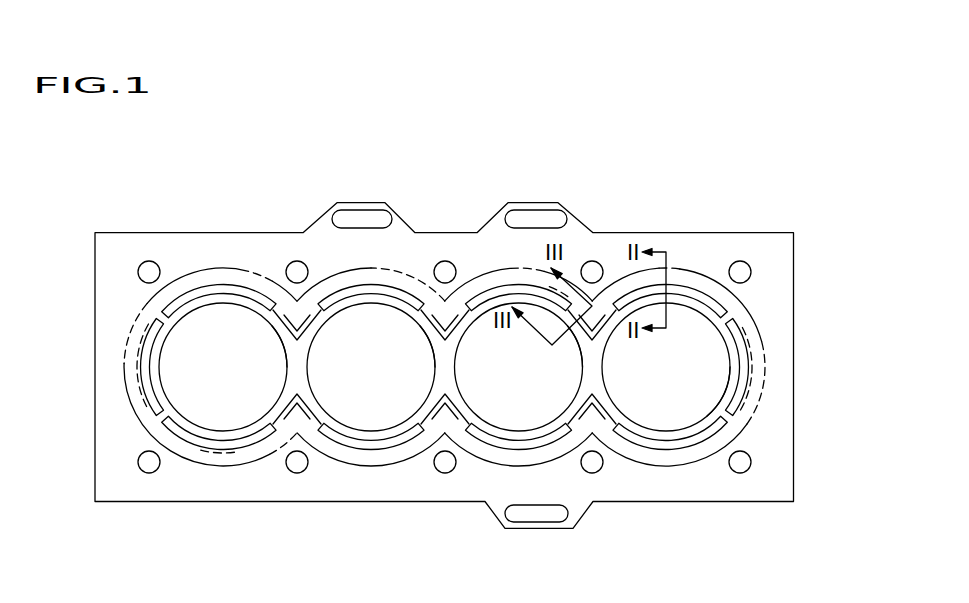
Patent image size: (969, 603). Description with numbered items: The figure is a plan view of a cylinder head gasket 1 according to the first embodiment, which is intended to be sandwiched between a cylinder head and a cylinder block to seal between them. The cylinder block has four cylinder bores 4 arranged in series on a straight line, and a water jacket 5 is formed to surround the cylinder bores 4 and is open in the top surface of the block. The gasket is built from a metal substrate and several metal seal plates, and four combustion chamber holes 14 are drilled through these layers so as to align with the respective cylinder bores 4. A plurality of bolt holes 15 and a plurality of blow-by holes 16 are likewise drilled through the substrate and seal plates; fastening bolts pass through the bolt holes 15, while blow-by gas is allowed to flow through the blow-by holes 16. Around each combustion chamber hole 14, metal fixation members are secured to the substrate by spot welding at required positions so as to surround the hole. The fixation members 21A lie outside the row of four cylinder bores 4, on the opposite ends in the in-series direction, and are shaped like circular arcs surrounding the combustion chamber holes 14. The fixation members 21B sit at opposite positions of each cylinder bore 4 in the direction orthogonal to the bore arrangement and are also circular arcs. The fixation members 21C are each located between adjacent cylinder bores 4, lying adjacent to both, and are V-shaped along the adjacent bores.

The cylinder head gasket 1 is at (746, 502).
The cylinder bore 4 is at (223, 370).
The water jacket 5 is at (692, 270).
The combustion chamber hole 14 is at (288, 362).
The bolt hole 15 is at (151, 270).
The blow-by hole 16 is at (538, 210).
The fixation member 21A is at (138, 355).
The fixation member 21B is at (703, 296).
The fixation member 21C is at (282, 314).